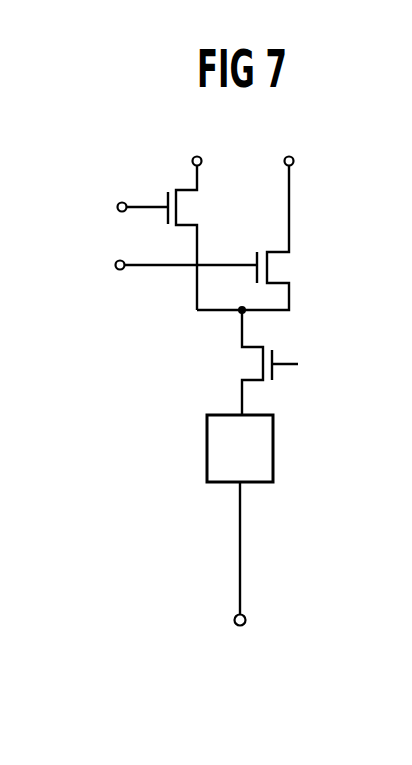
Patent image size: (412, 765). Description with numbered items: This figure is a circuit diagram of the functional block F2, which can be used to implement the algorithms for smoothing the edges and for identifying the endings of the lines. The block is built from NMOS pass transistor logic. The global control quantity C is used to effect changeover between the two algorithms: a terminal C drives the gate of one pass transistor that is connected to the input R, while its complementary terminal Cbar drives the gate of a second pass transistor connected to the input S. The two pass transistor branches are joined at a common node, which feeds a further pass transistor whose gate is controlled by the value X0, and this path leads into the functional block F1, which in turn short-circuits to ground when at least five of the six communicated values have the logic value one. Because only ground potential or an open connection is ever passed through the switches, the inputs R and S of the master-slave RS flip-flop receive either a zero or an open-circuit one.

The reset input R is at (190, 214).
The set input S is at (247, 214).
The global control quantity C is at (132, 208).
The complementary global control quantity Cbar is at (109, 246).
The pixel value input X0 is at (287, 362).
The functional block F1 is at (240, 520).